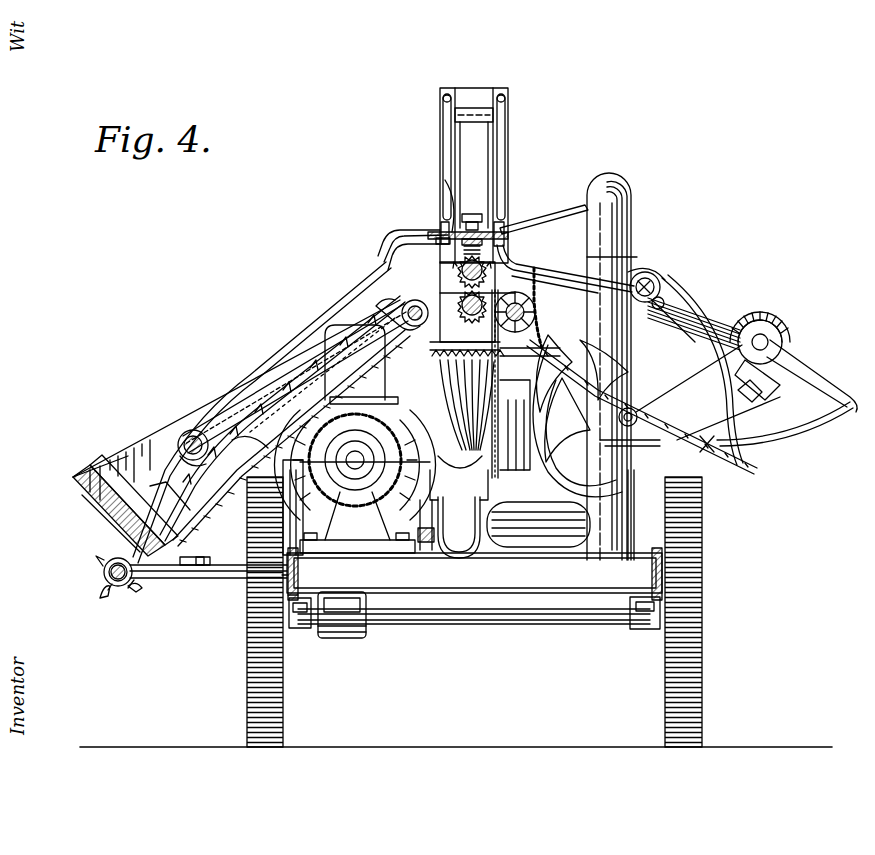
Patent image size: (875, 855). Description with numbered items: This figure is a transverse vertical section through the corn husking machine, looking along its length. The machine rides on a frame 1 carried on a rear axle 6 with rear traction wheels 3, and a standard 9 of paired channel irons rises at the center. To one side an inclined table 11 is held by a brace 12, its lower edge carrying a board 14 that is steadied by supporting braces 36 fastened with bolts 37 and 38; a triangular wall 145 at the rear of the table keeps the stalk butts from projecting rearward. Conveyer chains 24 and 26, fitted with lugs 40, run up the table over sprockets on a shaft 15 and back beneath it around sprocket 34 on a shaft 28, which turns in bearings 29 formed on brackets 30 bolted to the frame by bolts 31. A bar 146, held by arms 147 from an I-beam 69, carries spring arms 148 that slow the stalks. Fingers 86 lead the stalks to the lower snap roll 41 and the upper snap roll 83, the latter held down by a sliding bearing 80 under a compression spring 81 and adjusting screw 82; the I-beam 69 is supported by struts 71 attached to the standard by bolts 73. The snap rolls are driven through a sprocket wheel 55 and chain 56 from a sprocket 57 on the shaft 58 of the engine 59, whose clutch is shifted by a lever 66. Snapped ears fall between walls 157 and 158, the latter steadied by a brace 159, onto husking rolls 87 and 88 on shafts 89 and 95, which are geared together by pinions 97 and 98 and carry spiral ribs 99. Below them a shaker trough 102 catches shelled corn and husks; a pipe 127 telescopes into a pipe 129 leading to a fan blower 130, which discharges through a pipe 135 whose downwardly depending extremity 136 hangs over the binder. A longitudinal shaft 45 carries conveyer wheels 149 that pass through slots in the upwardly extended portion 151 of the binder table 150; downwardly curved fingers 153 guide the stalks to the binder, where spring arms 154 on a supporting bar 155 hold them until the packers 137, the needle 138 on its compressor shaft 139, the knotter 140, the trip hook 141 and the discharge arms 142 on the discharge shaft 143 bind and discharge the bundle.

The frame 1 is at (646, 553).
The rear traction wheels 3 is at (283, 710).
The rear axle 6 is at (546, 620).
The standard 9 is at (474, 96).
The inclined table 11 is at (167, 495).
The brace 12 is at (360, 300).
The board 14 is at (92, 470).
The shaft 15 is at (392, 262).
The chain 24 is at (293, 507).
The chain 26 is at (262, 408).
The shaft 28 is at (136, 590).
The bearings 29 is at (104, 598).
The supporting brackets 30 is at (224, 580).
The bolts 31 is at (300, 582).
The sprocket 34 is at (104, 582).
The supporting braces 36 is at (116, 515).
The bolts 37 is at (92, 500).
The bolts 38 is at (204, 556).
The lugs 40 is at (318, 380).
The lower snap roll 41 is at (480, 274).
The longitudinal shaft 45 is at (536, 305).
The sprocket wheel 55 is at (532, 262).
The chain 56 is at (312, 545).
The sprocket 57 is at (368, 480).
The engine shaft 58 is at (348, 470).
The engine 59 is at (354, 470).
The lever 66 is at (250, 446).
The I-beam 69 is at (448, 196).
The struts 71 is at (500, 150).
The bolts 73 is at (440, 98).
The sliding bearing 80 is at (440, 240).
The compression spring 81 is at (508, 226).
The adjusting screw 82 is at (472, 214).
The upper snap roll 83 is at (530, 222).
The fingers 86 is at (408, 242).
The husking roll 87 is at (518, 424).
The husking roll 88 is at (459, 514).
The shaft 89 is at (499, 384).
The shaft 95 is at (438, 360).
The pinion 97 is at (473, 346).
The pinion 98 is at (465, 308).
The spiral ribs 99 is at (462, 536).
The shaker trough 102 is at (428, 542).
The pipe 127 is at (462, 556).
The pipe 129 is at (538, 524).
The fan blower 130 is at (618, 530).
The pipe 135 is at (632, 232).
The downwardly depending extremity 136 is at (637, 258).
The packers 137 is at (586, 346).
The needle 138 is at (577, 421).
The compressor shaft 139 is at (636, 410).
The knotter 140 is at (728, 320).
The trip hook 141 is at (642, 414).
The discharge arms 142 is at (822, 375).
The discharge shaft 143 is at (778, 326).
The wall 145 is at (144, 450).
The bar 146 is at (195, 428).
The arms 147 is at (296, 350).
The spring arms 148 is at (192, 462).
The conveyer wheels 149 is at (530, 300).
The binder table 150 is at (630, 382).
The upwardly extended portion 151 is at (555, 265).
The downwardly curved fingers 153 is at (660, 293).
The spring arms 154 is at (712, 300).
The supporting bar 155 is at (668, 282).
The wall 157 is at (365, 429).
The wall 158 is at (575, 433).
The brace 159 is at (530, 361).